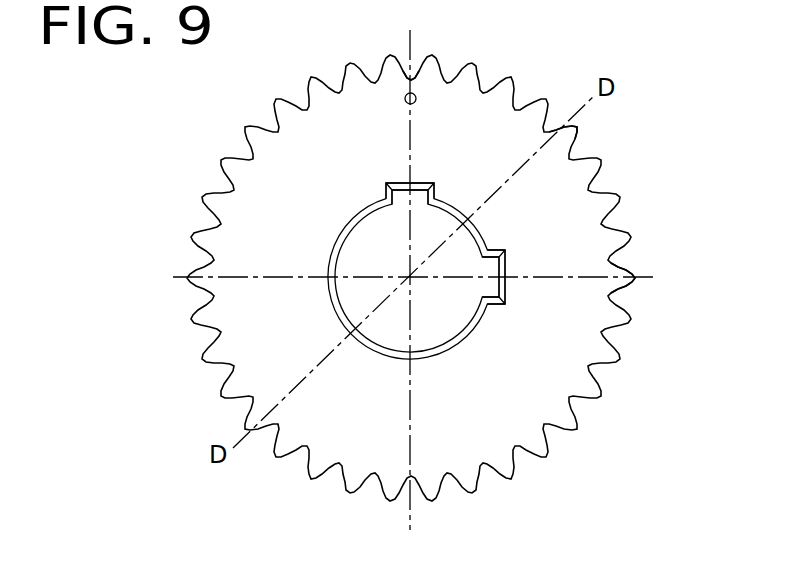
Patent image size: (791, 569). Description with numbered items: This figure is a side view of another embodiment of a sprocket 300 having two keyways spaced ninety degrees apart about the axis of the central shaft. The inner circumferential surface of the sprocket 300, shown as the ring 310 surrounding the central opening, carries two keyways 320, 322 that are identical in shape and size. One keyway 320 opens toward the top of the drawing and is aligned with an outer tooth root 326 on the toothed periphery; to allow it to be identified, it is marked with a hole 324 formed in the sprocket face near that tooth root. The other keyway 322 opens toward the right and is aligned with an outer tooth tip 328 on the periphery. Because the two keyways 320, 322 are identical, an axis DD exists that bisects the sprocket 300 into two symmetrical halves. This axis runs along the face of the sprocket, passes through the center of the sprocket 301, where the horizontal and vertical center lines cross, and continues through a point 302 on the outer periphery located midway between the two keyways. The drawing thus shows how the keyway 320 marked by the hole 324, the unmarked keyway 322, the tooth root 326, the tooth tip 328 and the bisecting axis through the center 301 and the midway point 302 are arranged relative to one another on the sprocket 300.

The sprocket 300 is at (265, 155).
The center of the sprocket 301 is at (409, 277).
The point midway between the two keyways 302 is at (560, 130).
The central hub bore ring 310 is at (338, 240).
The keyway 320 is at (400, 182).
The keyway 322 is at (507, 265).
The hole 324 is at (405, 97).
The outer tooth root 326 is at (420, 73).
The outer tooth tip 328 is at (640, 278).